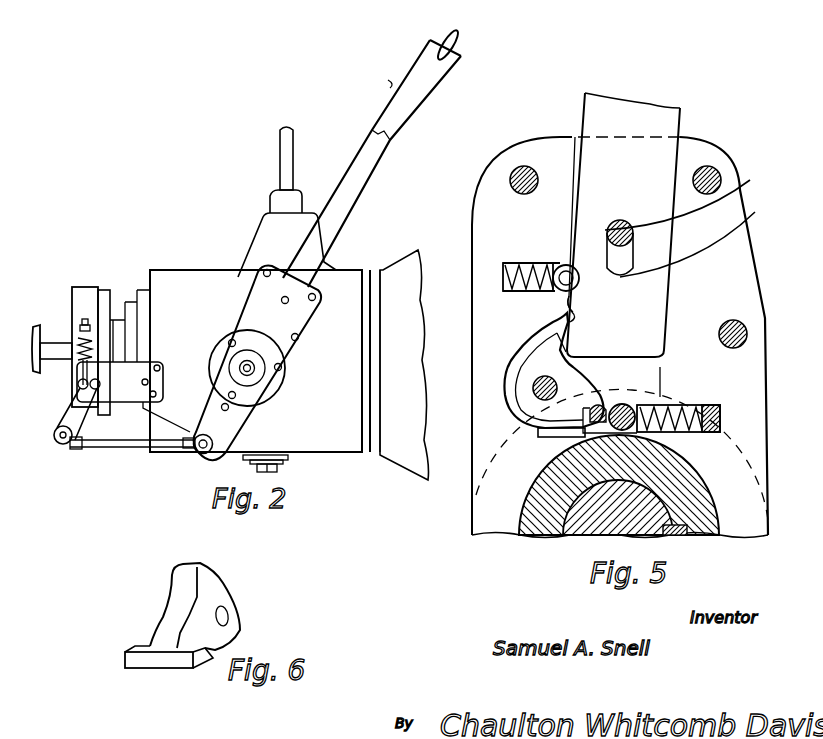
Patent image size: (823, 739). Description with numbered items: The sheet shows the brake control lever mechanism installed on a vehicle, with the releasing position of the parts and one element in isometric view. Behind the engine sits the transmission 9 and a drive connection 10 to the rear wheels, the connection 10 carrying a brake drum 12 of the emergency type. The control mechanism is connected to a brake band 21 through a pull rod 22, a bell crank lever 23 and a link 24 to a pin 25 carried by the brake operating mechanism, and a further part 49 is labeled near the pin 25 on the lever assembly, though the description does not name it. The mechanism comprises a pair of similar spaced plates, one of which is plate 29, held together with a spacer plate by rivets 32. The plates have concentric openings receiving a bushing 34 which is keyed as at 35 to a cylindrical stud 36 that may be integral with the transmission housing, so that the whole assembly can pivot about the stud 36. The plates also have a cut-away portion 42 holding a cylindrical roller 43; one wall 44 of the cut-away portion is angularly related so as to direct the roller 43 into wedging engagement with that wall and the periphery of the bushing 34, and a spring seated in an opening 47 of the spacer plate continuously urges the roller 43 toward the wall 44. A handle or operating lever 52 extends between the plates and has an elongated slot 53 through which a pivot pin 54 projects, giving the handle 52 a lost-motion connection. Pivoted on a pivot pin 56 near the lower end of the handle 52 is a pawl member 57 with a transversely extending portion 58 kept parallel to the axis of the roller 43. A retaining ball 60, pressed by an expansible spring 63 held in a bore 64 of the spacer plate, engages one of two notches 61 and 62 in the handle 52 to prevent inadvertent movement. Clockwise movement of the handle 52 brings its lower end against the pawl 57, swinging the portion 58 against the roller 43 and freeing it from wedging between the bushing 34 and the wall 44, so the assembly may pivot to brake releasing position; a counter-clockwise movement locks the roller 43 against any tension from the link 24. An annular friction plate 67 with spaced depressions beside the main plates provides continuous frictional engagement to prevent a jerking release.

In FIG. 2, the transmission 9 is at (293, 427).
In FIG. 2, the drive connection 10 is at (60, 345).
In FIG. 2, the brake drum 12 is at (101, 292).
In FIG. 2, the brake band 21 is at (84, 287).
In FIG. 2, the pull rod 22 is at (80, 368).
In FIG. 2, the bell crank lever 23 is at (73, 413).
In FIG. 2, the link 24 is at (127, 443).
In FIG. 2, the pin 25 is at (199, 452).
In FIG. 2, the plate 29 is at (251, 298).
In FIG. 2, the pivot stud 49 is at (220, 447).
In FIG. 2, the handle 52 is at (361, 204).
In FIG. 5, the handle 52 is at (683, 127).
In FIG. 2, the annular plate 67 is at (270, 395).
In FIG. 5, the rivets 32 is at (517, 168).
In FIG. 5, the bushing 34 is at (523, 537).
In FIG. 5, the key 35 is at (680, 537).
In FIG. 5, the stud 36 is at (577, 537).
In FIG. 5, the cut-away portion 42 is at (700, 407).
In FIG. 5, the roller 43 is at (622, 403).
In FIG. 5, the angular wall 44 is at (627, 390).
In FIG. 5, the opening 47 is at (702, 432).
In FIG. 5, the elongated slot 53 is at (752, 222).
In FIG. 5, the pivot pin 54 is at (744, 194).
In FIG. 5, the pivot pin 56 is at (533, 388).
In FIG. 5, the pawl member 57 is at (540, 352).
In FIG. 6, the pawl member 57 is at (210, 583).
In FIG. 5, the transversely extending portion 58 is at (523, 428).
In FIG. 6, the transversely extending portion 58 is at (157, 665).
In FIG. 5, the retaining ball 60 is at (557, 272).
In FIG. 5, the notch 61 is at (579, 291).
In FIG. 5, the notch 62 is at (583, 311).
In FIG. 5, the expansible spring 63 is at (553, 263).
In FIG. 5, the bore 64 is at (503, 268).